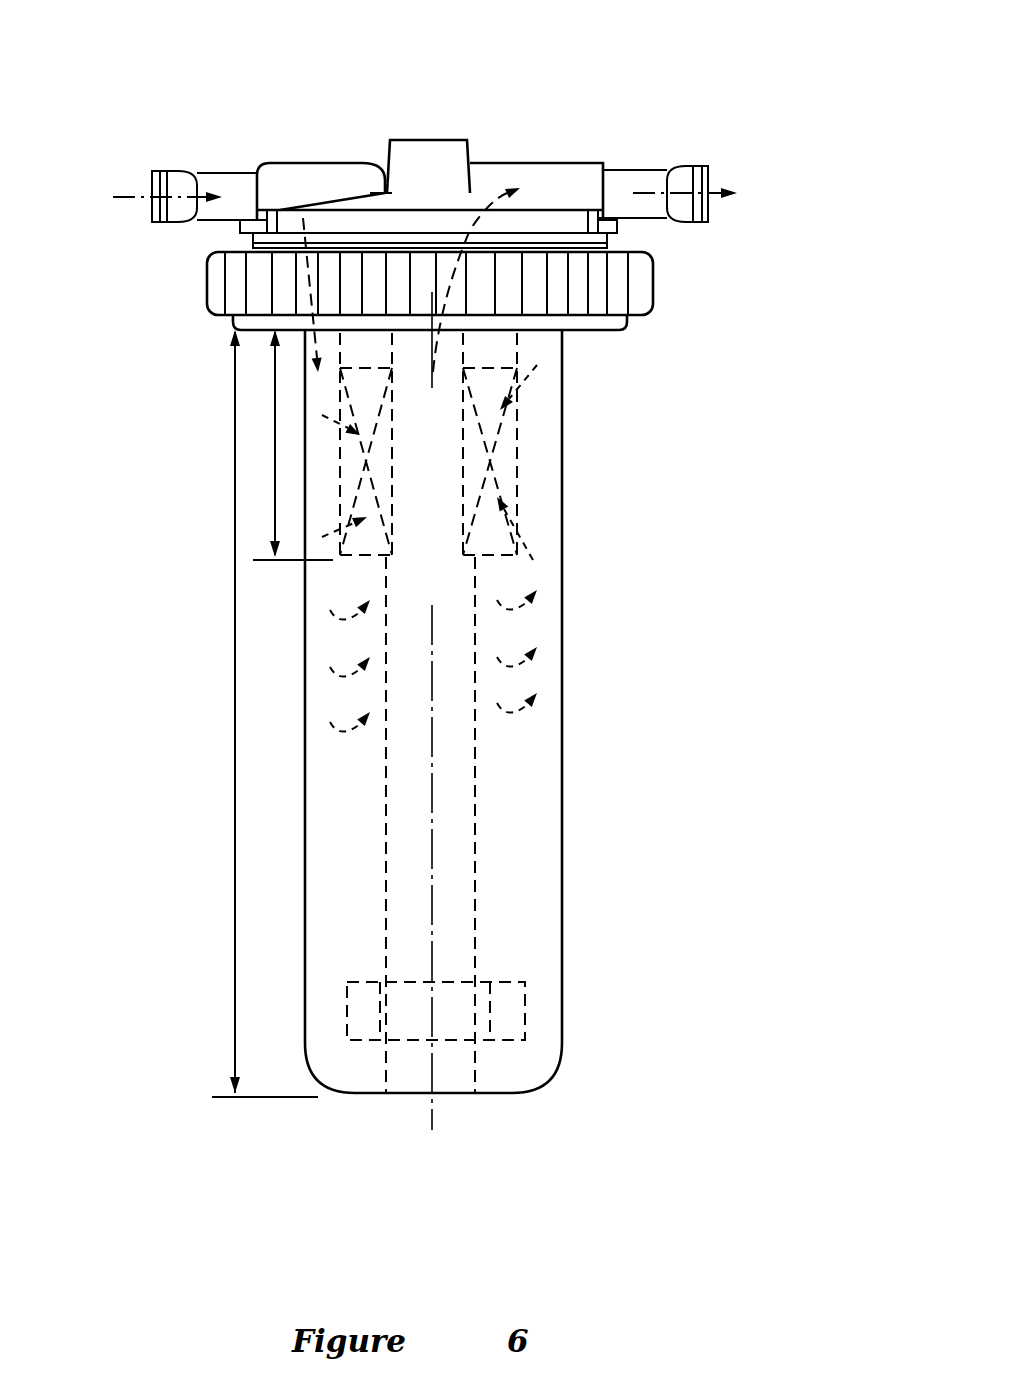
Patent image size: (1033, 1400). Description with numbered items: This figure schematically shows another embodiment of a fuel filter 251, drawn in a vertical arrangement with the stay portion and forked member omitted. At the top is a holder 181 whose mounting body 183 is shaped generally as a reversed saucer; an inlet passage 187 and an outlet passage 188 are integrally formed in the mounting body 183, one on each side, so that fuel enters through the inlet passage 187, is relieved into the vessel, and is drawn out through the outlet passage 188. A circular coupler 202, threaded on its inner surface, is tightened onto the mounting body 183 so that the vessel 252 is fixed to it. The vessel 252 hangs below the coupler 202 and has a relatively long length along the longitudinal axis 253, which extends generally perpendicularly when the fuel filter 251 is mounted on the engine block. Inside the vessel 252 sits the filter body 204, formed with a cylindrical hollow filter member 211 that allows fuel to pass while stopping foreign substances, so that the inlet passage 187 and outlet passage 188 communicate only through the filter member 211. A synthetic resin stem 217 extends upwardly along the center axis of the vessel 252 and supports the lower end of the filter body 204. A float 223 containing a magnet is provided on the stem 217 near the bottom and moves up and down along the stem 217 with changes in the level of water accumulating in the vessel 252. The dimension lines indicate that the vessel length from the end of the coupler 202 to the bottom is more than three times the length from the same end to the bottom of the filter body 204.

The holder 181 is at (490, 93).
The inlet passage 187 is at (182, 170).
The outlet passage 188 is at (657, 168).
The mounting body 183 is at (349, 221).
The coupler 202 is at (645, 282).
The fuel filter 251 is at (448, 459).
The filter body 204 is at (314, 493).
The filter member 211 is at (505, 470).
The vessel 252 is at (562, 737).
The stem 217 is at (475, 865).
The float 223 is at (525, 1010).
The longitudinal axis 253 is at (437, 1107).